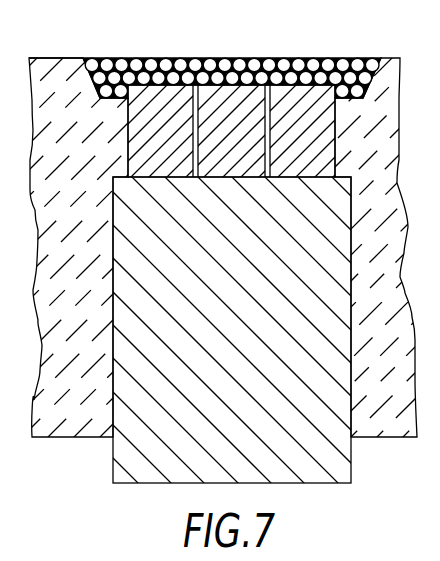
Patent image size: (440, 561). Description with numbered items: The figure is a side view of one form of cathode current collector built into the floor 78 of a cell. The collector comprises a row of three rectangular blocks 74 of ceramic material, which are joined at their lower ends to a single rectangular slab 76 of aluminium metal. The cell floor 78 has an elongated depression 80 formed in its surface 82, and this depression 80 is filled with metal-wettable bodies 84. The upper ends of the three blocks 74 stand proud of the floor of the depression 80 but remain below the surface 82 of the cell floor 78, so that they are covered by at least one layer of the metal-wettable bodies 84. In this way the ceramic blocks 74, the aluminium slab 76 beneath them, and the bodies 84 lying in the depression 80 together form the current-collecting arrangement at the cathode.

The rectangular blocks 74 is at (243, 157).
The rectangular slab 76 is at (330, 378).
The floor 78 is at (79, 268).
The elongated depression 80 is at (92, 80).
The surface 82 is at (63, 61).
The metal-wettable bodies 84 is at (255, 63).